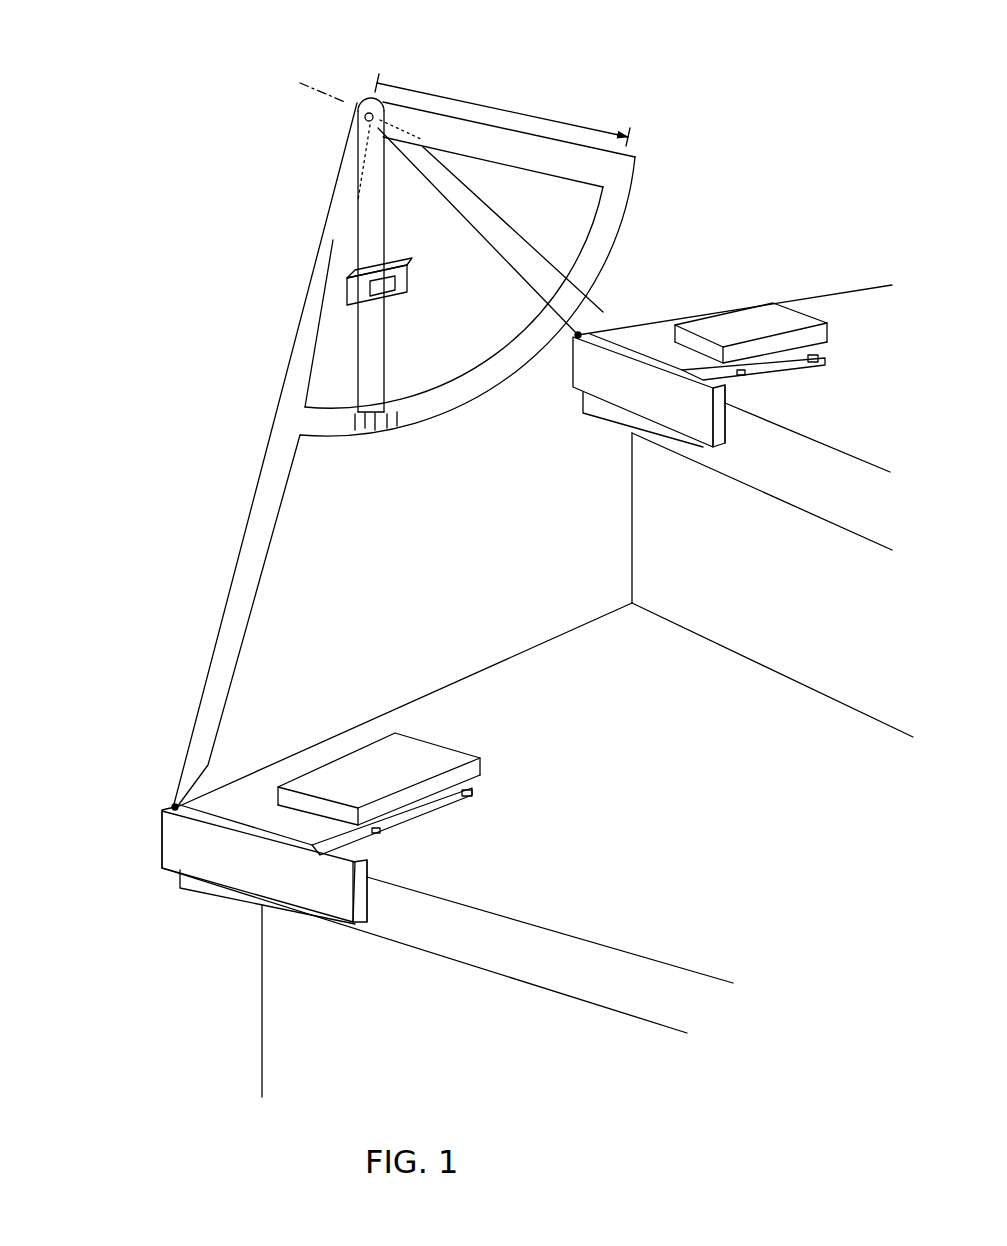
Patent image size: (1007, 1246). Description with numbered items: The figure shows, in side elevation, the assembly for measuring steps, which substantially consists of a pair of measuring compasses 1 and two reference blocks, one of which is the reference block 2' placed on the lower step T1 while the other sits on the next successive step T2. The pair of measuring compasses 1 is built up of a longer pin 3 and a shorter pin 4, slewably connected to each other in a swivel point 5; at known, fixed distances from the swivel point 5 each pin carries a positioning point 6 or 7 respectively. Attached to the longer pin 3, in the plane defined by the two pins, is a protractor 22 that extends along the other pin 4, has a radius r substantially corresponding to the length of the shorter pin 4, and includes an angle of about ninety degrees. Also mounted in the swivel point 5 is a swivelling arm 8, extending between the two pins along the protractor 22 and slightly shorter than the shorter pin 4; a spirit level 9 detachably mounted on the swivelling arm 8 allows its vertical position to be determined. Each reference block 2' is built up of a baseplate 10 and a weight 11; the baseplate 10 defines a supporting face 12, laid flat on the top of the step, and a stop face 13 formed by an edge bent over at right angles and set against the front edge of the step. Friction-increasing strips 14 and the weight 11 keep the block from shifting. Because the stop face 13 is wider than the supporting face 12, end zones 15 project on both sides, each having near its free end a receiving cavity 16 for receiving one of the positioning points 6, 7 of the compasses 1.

The pair of measuring compasses 1 is at (228, 152).
The reference block 2' is at (501, 704).
The pin 3 is at (245, 583).
The pin 4 is at (503, 252).
The swivel point 5 is at (365, 100).
The positioning point 6 is at (173, 805).
The positioning point 7 is at (592, 330).
The swivelling arm 8 is at (378, 338).
The spirit level 9 is at (402, 284).
The baseplate 10 is at (658, 355).
The weight 11 is at (727, 323).
The supporting face 12 is at (812, 364).
The stop face 13 is at (727, 427).
The friction-increasing strips 14 is at (819, 359).
The end zone 15 is at (590, 360).
The receiving cavity 16 is at (160, 812).
The protractor 22 is at (575, 172).
The radius r is at (502, 110).
The step T1 is at (537, 850).
The step T2 is at (762, 502).